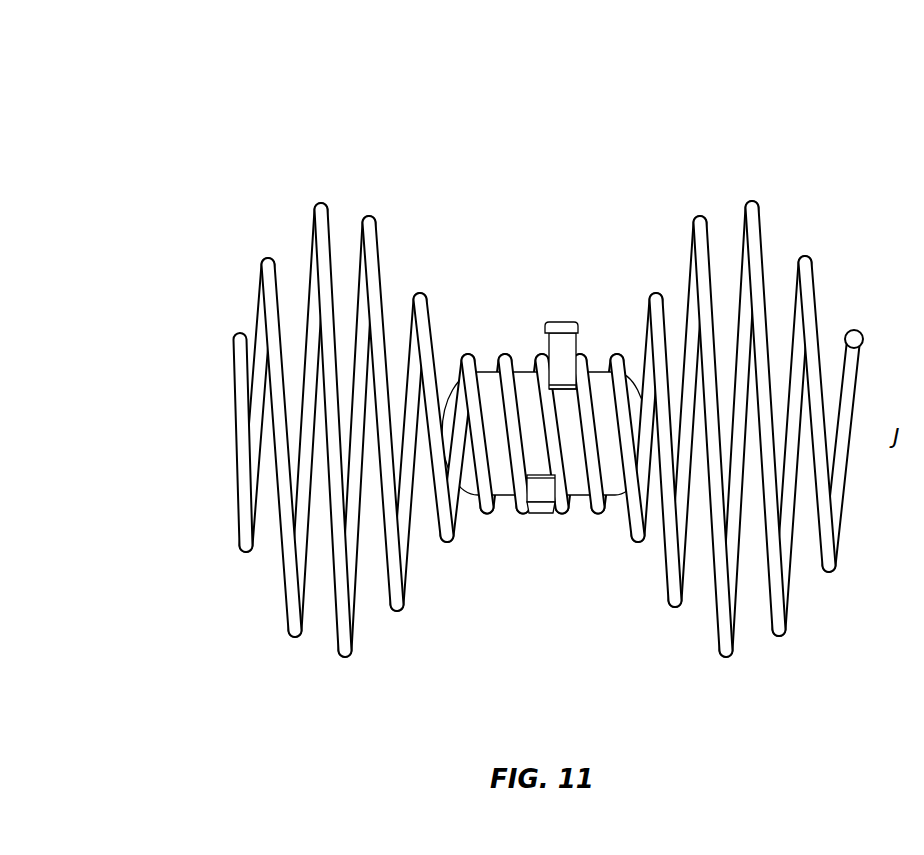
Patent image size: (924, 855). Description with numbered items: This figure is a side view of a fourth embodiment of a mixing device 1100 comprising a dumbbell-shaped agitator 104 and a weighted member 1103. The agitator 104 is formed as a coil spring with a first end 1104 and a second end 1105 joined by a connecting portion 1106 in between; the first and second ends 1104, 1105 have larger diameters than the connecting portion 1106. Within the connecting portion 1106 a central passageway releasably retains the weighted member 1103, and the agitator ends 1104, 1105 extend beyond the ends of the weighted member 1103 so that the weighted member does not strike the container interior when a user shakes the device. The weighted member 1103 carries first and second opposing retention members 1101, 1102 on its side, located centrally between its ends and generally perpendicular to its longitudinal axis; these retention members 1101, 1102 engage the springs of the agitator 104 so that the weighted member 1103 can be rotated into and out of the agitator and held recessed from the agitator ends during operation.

The spring assembly 1100 is at (178, 62).
The dumbbell-shaped agitator 104 is at (240, 493).
The first end 1104 is at (433, 687).
The second end 1105 is at (866, 687).
The connecting portion 1106 is at (533, 495).
The weighted member 1103 is at (520, 363).
The first retention member 1101 is at (587, 357).
The second retention member 1102 is at (545, 518).